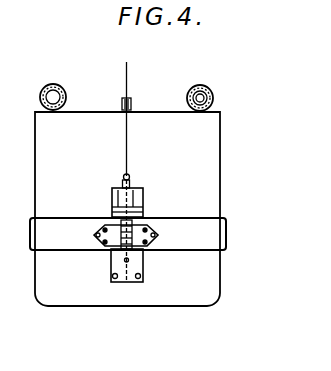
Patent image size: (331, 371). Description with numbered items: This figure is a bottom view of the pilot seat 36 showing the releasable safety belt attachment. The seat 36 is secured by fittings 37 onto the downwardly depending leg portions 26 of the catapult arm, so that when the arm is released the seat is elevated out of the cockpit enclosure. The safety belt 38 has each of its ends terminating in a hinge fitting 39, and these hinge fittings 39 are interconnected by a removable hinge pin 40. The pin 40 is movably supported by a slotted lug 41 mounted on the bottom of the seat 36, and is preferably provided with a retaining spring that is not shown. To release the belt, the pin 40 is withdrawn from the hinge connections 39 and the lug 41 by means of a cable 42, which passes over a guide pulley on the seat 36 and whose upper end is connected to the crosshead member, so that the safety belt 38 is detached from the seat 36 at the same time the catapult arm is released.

The downwardly depending leg portions 26 is at (210, 88).
The pilot seat 36 is at (212, 181).
The fittings 37 is at (62, 88).
The safety belt 38 is at (163, 243).
The hinge fitting 39 is at (102, 220).
The removable hinge pin 40 is at (130, 184).
The slotted lug 41 is at (110, 190).
The cable 42 is at (130, 147).